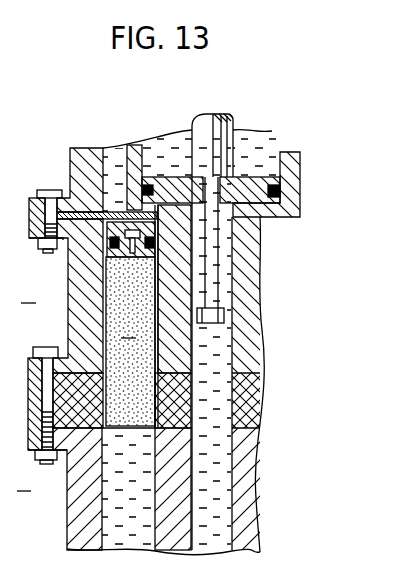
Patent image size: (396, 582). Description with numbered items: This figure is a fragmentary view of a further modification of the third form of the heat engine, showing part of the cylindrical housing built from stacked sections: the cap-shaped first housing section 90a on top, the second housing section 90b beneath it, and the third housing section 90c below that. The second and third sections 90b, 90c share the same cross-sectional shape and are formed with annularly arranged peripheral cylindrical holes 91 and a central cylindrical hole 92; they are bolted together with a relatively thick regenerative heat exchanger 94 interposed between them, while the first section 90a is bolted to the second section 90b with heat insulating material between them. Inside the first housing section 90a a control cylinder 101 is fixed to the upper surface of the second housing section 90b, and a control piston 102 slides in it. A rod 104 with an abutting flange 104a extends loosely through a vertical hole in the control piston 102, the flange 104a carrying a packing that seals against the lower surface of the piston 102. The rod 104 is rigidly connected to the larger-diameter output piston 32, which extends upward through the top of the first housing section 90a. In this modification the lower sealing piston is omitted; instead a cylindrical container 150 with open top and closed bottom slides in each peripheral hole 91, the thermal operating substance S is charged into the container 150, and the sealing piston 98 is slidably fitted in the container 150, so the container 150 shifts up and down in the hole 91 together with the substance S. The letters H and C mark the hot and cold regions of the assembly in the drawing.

The output piston 32 is at (218, 113).
The first housing section 90a is at (53, 170).
The second housing section 90b is at (75, 326).
The third housing section 90c is at (80, 498).
The peripheral cylindrical hole 91 is at (149, 484).
The central cylindrical hole 92 is at (218, 523).
The regenerative heat exchanger 94 is at (253, 404).
The sealing piston 98 is at (104, 268).
The control cylinder 101 is at (300, 186).
The control piston 102 is at (273, 199).
The rod 104 is at (216, 289).
The abutting flange 104a is at (224, 316).
The cylindrical container 150 is at (160, 355).
The thermal operating substance S is at (132, 316).
The hot zone H is at (28, 293).
The cold zone C is at (24, 481).